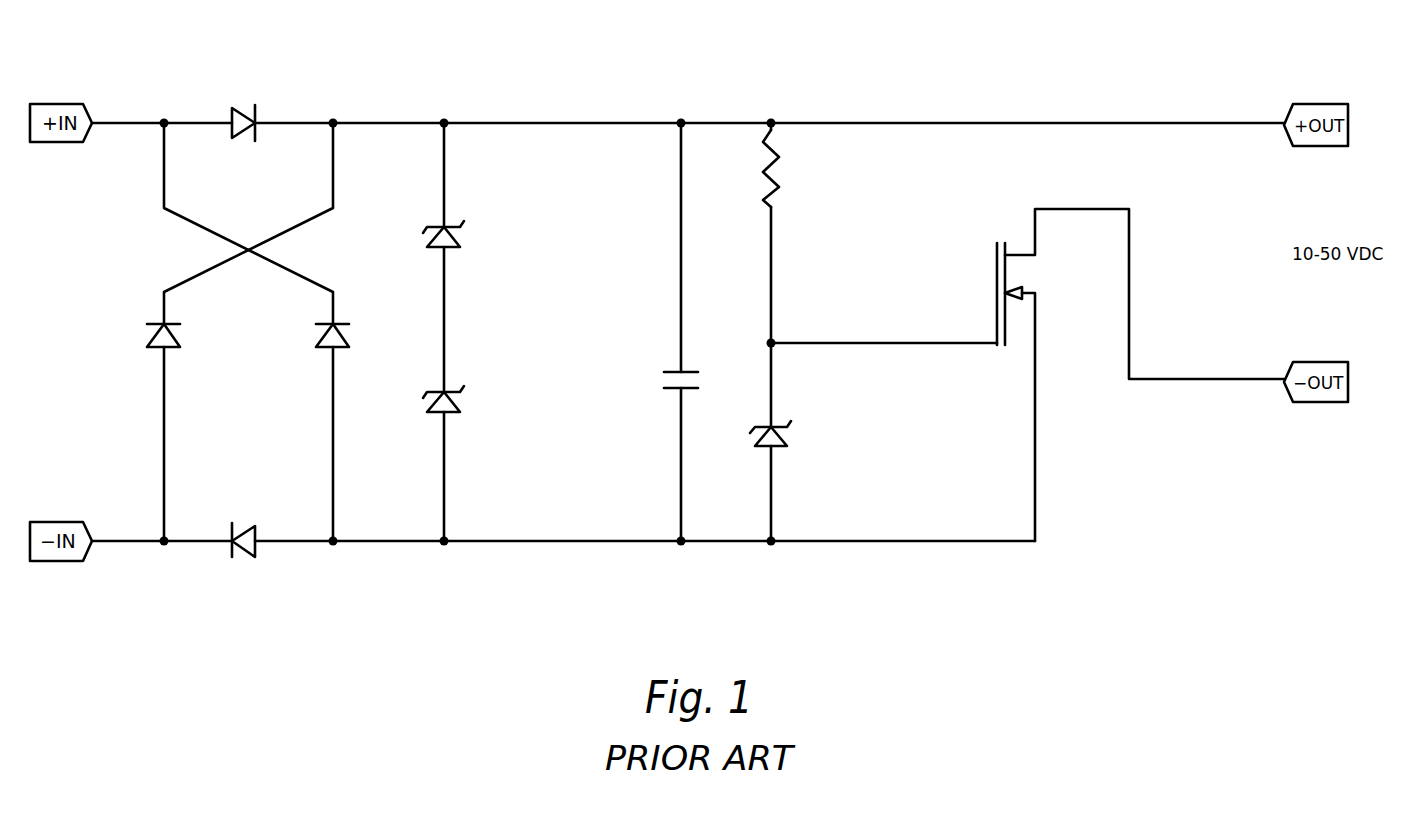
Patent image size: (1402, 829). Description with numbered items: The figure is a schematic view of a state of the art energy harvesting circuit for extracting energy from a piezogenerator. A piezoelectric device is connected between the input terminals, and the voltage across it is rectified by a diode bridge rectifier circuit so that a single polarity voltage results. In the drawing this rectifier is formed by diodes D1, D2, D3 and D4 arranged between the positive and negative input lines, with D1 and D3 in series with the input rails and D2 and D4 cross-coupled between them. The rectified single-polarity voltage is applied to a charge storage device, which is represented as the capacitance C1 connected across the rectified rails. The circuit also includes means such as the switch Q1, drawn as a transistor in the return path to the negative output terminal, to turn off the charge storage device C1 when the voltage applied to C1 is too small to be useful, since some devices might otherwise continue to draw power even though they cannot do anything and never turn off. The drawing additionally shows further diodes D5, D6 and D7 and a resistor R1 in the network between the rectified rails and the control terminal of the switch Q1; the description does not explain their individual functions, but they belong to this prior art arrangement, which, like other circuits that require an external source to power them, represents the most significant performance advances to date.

The diode D1 is at (257, 129).
The diode D2 is at (169, 325).
The diode D3 is at (231, 536).
The diode D4 is at (338, 325).
The zener diode D5 is at (447, 223).
The zener diode D6 is at (448, 388).
The zener diode D7 is at (776, 421).
The resistor R1 is at (785, 168).
The capacitance C1 is at (673, 370).
The switch Q1 is at (995, 290).